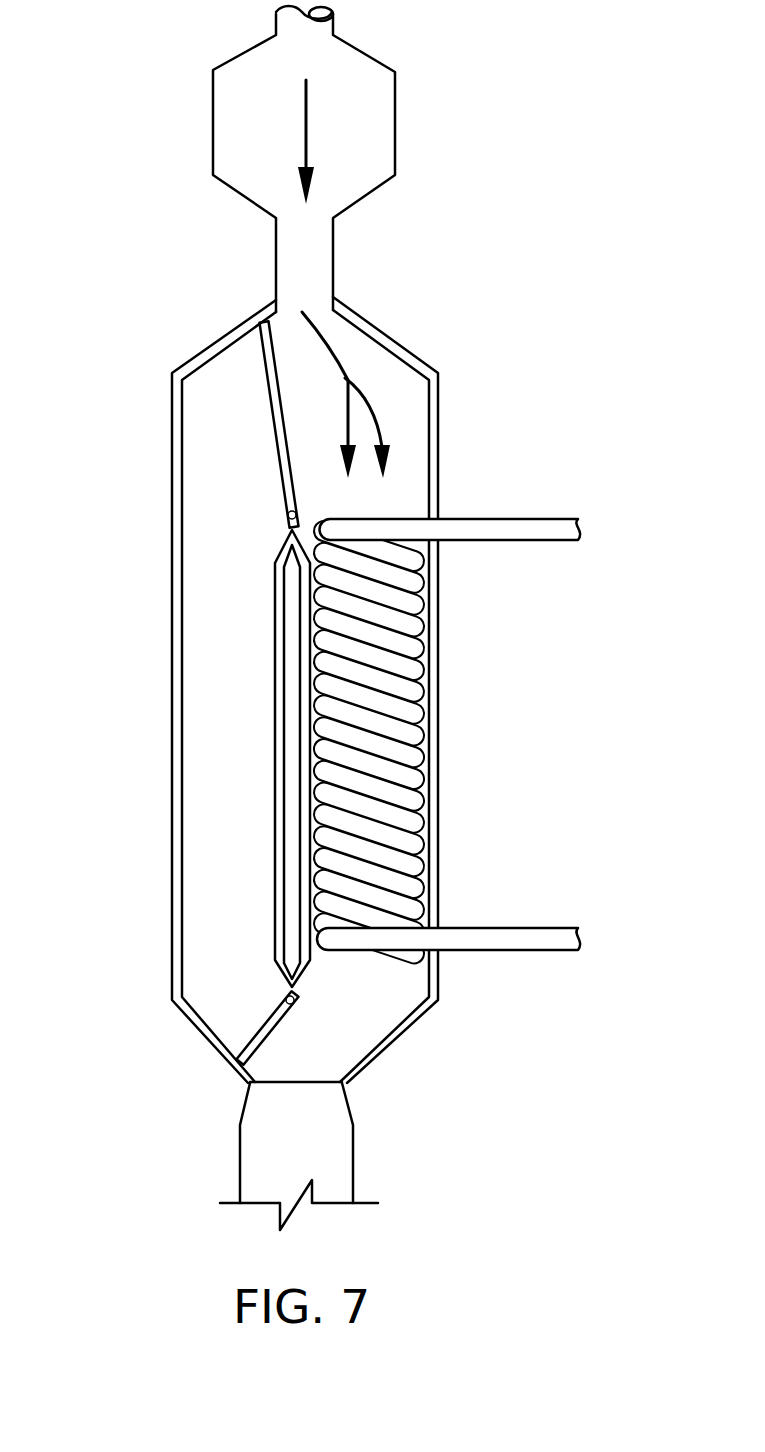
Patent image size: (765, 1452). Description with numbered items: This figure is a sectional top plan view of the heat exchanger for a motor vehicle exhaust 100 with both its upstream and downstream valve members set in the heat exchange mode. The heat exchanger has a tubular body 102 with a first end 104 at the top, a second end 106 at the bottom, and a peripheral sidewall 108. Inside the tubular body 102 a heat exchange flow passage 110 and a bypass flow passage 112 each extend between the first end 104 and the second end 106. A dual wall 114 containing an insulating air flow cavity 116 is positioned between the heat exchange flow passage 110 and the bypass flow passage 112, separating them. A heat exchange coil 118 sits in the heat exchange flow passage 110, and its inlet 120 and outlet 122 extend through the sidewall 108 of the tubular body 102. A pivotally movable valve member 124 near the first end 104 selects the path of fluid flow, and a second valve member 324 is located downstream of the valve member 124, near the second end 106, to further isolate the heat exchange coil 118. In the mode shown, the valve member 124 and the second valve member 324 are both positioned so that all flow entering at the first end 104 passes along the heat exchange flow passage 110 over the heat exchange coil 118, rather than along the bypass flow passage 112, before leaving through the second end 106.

The heat exchanger for a motor vehicle exhaust 100 is at (526, 176).
The tubular body 102 is at (170, 480).
The first end 104 is at (220, 337).
The second end 106 is at (208, 1037).
The peripheral sidewall 108 is at (177, 623).
The heat exchange flow passage 110 is at (407, 495).
The bypass flow passage 112 is at (210, 565).
The dual wall 114 is at (280, 728).
The insulating air flow cavity 116 is at (293, 790).
The heat exchange coil 118 is at (412, 713).
The inlet 120 is at (498, 942).
The outlet 122 is at (493, 530).
The valve member 124 is at (275, 413).
The second valve member 324 is at (257, 1030).